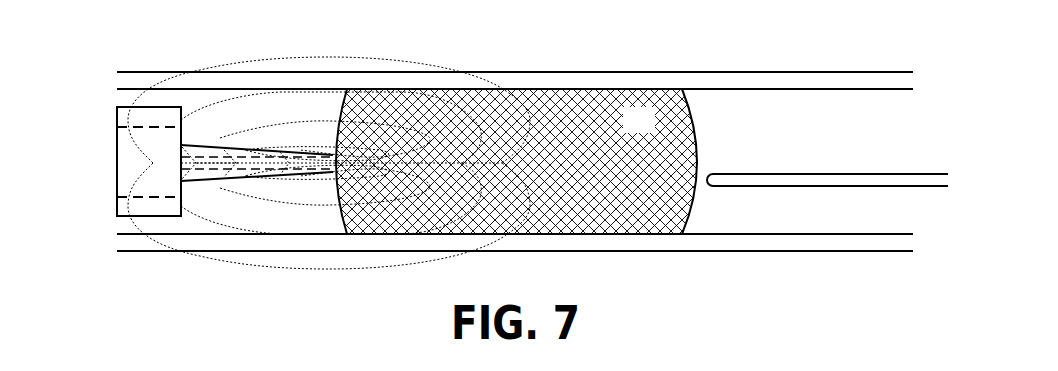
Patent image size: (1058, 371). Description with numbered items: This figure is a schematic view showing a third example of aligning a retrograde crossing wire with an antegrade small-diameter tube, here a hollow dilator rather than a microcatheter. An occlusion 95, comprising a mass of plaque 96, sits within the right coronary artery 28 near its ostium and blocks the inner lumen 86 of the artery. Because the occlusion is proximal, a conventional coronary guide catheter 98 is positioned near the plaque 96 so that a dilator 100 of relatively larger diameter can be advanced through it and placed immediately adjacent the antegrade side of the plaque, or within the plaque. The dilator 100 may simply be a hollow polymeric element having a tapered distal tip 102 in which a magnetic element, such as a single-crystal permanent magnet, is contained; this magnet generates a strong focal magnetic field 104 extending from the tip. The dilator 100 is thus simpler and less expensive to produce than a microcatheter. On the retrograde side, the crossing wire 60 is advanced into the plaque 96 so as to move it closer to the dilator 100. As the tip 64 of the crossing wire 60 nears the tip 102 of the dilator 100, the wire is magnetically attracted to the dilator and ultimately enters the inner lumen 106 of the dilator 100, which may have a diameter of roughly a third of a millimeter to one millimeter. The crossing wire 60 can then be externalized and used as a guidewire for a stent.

The right coronary artery 28 is at (713, 72).
The crossing wire 60 is at (893, 158).
The tip of the crossing wire 64 is at (712, 163).
The inner lumen of the artery 86 is at (819, 221).
The occlusion 95 is at (587, 52).
The plaque 96 is at (653, 131).
The coronary guide catheter 98 is at (143, 117).
The dilator 100 is at (224, 136).
The tapered distal tip 102 is at (248, 173).
The focal magnetic field 104 is at (408, 53).
The inner lumen of the dilator 106 is at (228, 162).